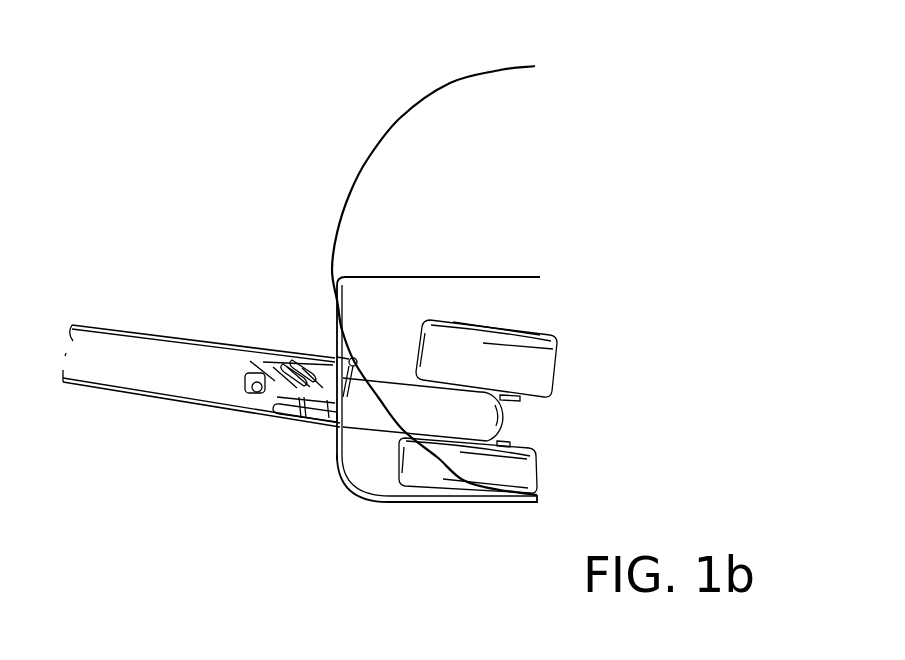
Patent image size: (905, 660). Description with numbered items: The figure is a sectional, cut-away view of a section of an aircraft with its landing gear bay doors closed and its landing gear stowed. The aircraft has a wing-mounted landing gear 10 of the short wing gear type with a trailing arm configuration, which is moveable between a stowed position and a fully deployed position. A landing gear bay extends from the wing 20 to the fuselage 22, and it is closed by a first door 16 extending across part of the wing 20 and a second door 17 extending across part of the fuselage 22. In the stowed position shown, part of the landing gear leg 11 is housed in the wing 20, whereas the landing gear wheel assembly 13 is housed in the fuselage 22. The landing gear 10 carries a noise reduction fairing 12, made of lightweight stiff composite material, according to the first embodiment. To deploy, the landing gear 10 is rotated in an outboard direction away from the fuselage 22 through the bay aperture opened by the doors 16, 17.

The landing gear 10 is at (545, 373).
The landing gear leg 11 is at (280, 383).
The noise reduction fairing 12 is at (500, 418).
The landing gear wheel assembly 13 is at (543, 347).
The first door 16 is at (295, 423).
The second door 17 is at (445, 496).
The wing 20 is at (123, 310).
The fuselage 22 is at (367, 173).